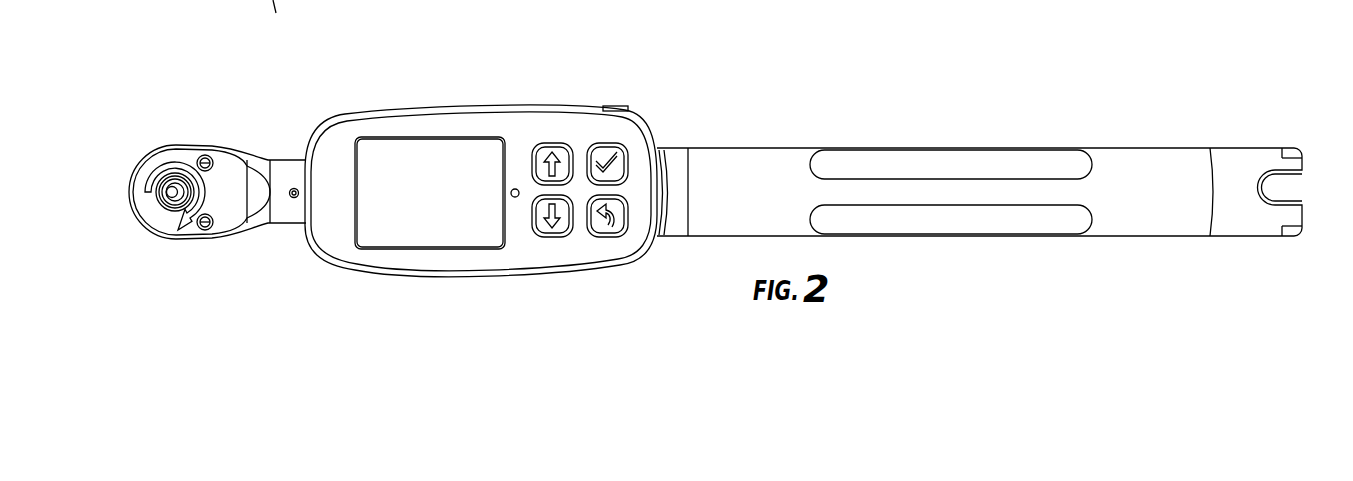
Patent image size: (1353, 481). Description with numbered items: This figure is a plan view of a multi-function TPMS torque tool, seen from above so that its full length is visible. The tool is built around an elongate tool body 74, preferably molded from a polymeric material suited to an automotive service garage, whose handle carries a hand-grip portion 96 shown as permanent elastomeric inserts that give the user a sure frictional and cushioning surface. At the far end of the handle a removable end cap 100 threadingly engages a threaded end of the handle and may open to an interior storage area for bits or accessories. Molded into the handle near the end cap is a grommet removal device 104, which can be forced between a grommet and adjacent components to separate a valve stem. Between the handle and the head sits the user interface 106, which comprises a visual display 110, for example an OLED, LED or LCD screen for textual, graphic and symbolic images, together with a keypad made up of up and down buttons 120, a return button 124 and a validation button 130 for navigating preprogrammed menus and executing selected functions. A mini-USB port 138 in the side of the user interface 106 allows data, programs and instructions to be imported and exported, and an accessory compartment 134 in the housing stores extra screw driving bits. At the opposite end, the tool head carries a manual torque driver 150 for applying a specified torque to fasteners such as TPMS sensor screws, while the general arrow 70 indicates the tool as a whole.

The torque wrench 70 is at (147, 98).
The tool body 74 is at (828, 88).
The hand-grip portion 96 is at (945, 158).
The removable end cap 100 is at (1278, 126).
The grommet removal device 104 is at (1300, 178).
The user interface 106 is at (447, 68).
The visual display 110 is at (443, 205).
The up and down buttons 120 is at (562, 224).
The return button 124 is at (617, 233).
The validation button 130 is at (607, 143).
The accessory compartment 134 is at (598, 100).
The mini-USB port 138 is at (368, 107).
The manual torque driver 150 is at (133, 218).